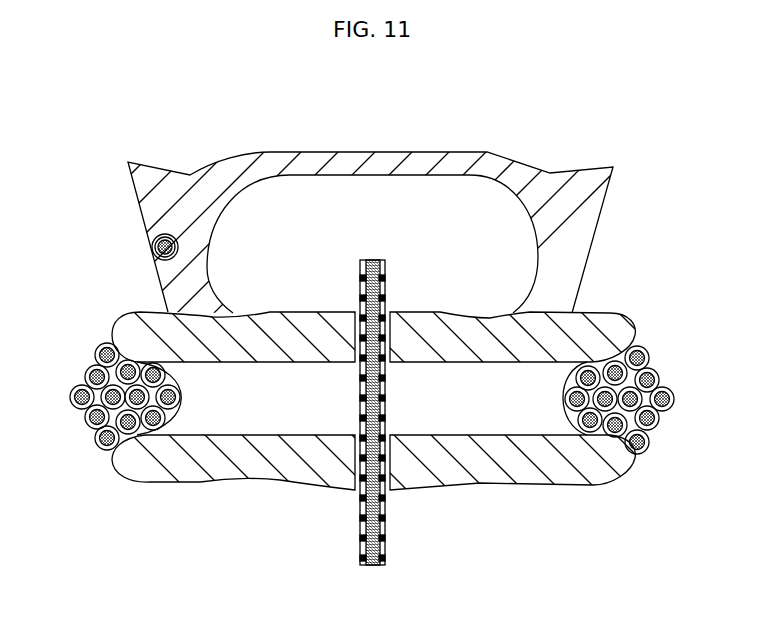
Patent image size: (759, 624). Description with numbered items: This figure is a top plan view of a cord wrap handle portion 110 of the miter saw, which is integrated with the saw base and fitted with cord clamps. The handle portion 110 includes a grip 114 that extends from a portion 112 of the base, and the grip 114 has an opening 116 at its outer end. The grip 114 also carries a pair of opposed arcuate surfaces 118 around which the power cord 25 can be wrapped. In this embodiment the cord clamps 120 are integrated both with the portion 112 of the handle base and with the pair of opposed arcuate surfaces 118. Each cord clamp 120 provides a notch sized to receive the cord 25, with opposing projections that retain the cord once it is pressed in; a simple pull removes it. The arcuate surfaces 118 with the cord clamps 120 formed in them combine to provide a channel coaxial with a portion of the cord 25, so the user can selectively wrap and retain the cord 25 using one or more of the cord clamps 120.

The handle portion 110 is at (180, 543).
The portion of the base 112 is at (590, 173).
The grip 114 is at (530, 480).
The opening 116 is at (455, 195).
The pair of opposed arcuate surfaces 118 is at (627, 320).
The cord clamps 120 is at (352, 305).
The power cord 25 is at (655, 378).